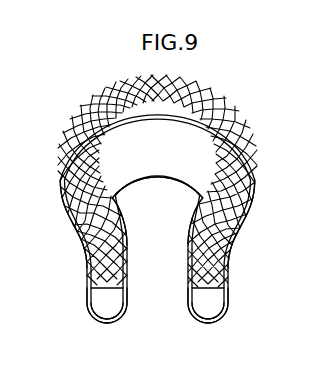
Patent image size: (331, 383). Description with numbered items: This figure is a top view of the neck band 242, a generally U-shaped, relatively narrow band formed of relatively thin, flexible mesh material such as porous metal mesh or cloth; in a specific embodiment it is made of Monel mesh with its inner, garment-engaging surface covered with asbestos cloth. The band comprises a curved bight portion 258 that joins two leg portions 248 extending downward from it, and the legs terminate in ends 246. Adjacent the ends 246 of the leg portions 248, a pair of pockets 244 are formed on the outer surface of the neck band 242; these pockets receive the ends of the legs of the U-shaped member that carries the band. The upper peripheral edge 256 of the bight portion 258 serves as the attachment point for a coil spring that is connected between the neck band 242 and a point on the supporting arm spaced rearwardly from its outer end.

The neck band 242 is at (245, 106).
The pockets 244 is at (108, 303).
The ends 246 is at (87, 297).
The leg portions 248 is at (100, 191).
The upper peripheral edge 256 is at (150, 103).
The bight portion 258 is at (178, 95).